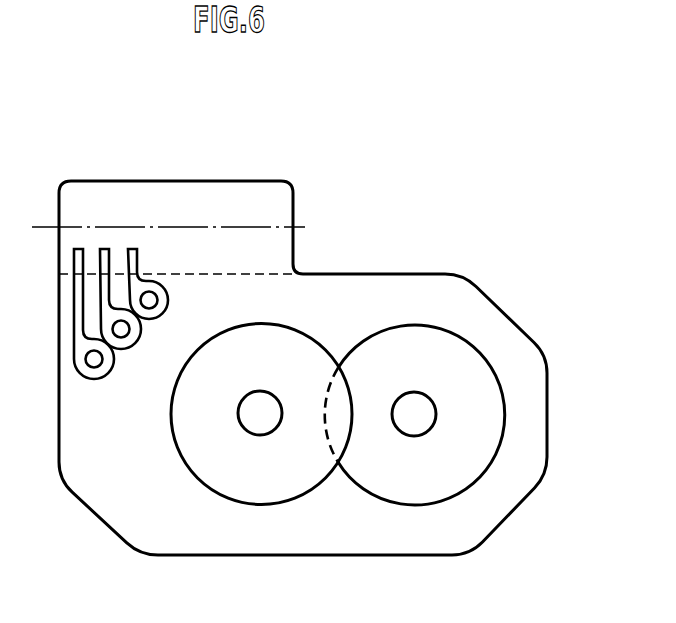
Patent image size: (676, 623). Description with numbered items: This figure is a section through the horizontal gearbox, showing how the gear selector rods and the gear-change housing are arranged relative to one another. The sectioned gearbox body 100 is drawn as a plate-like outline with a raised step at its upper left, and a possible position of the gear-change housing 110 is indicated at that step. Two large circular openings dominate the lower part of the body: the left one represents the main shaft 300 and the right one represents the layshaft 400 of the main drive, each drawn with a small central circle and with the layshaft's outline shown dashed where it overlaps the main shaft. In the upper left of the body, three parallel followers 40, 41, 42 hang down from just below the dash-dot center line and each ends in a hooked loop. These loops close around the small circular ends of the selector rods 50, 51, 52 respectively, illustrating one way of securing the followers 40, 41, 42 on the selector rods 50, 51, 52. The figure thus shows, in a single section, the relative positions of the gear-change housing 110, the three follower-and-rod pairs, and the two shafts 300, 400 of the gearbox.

The housing plate 100 is at (522, 318).
The gear-change housing 110 is at (294, 227).
The follower 40 is at (78, 250).
The follower 41 is at (104, 250).
The follower 42 is at (133, 250).
The selector rod 50 is at (90, 364).
The selector rod 51 is at (122, 337).
The selector rod 52 is at (151, 305).
The main shaft 300 is at (257, 414).
The layshaft 400 is at (417, 407).